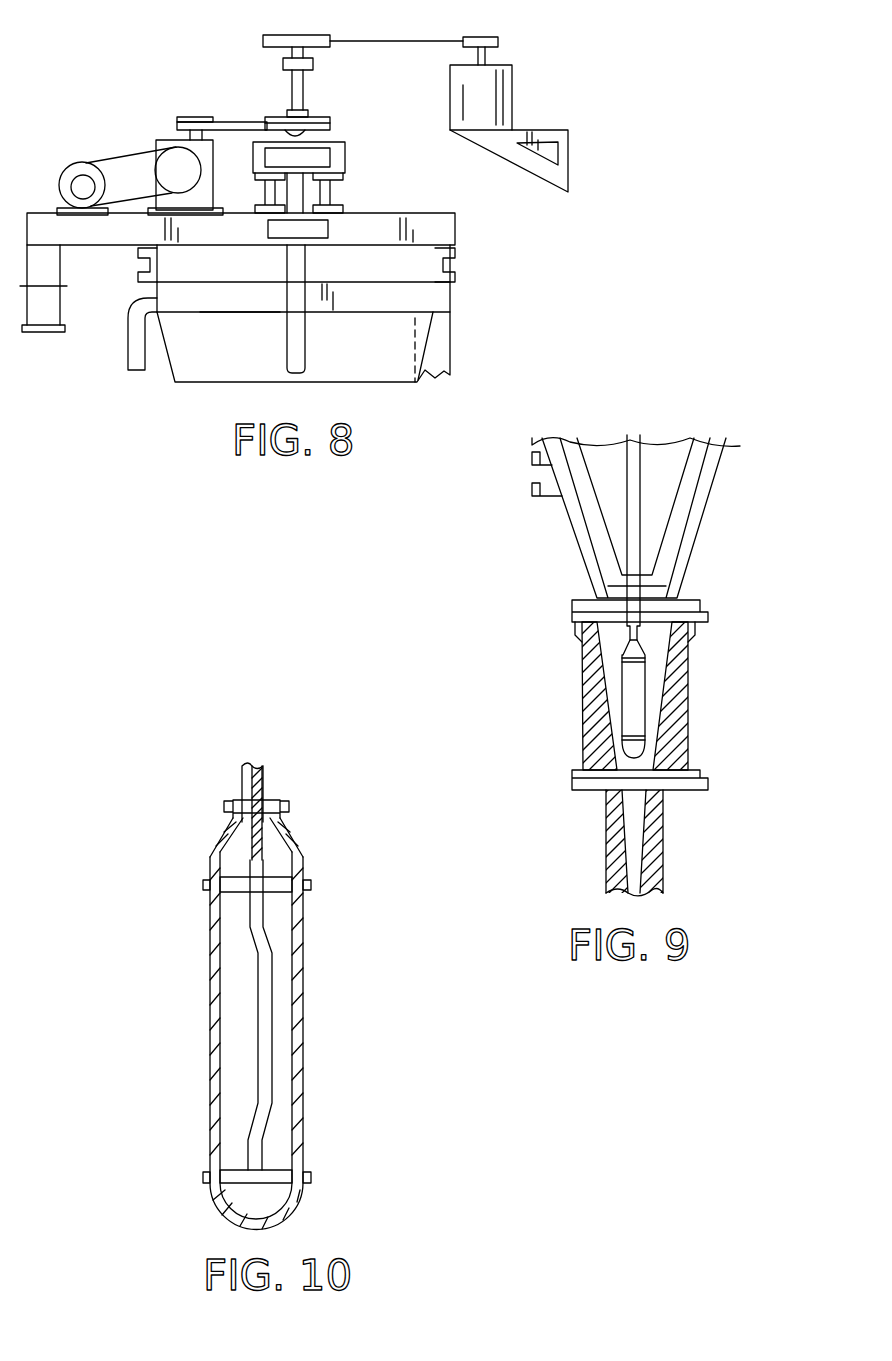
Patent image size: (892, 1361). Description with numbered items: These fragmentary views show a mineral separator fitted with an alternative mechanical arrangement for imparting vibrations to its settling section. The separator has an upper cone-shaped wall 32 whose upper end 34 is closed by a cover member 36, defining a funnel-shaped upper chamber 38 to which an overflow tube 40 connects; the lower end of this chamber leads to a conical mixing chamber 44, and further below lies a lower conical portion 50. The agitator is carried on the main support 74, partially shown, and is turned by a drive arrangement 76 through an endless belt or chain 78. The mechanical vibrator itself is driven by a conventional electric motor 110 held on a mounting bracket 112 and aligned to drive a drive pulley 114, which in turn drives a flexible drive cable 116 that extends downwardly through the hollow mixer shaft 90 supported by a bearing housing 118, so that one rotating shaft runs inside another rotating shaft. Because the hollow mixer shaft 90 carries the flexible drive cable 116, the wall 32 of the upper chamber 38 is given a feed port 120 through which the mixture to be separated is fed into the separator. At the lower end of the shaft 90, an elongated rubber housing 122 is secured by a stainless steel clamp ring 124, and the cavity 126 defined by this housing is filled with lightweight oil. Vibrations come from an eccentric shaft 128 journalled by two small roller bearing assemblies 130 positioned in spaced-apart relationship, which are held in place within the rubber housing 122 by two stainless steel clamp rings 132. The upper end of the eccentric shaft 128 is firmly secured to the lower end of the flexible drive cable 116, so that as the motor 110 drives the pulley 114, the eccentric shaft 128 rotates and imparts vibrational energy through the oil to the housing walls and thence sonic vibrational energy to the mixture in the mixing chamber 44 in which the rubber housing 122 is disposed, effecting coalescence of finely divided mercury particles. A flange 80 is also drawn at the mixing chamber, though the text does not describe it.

In FIG. 8, the upper cone-shaped wall 32 is at (420, 361).
In FIG. 8, the upper end 34 is at (341, 313).
In FIG. 8, the cover member 36 is at (400, 283).
In FIG. 8, the upper chamber 38 is at (400, 300).
In FIG. 9, the upper chamber 38 is at (710, 504).
In FIG. 8, the overflow tube 40 is at (126, 347).
In FIG. 9, the conical mixing chamber 44 is at (690, 729).
In FIG. 9, the lower conical portion 50 is at (663, 843).
In FIG. 8, the main support 74 is at (60, 297).
In FIG. 8, the drive arrangement 76 is at (126, 145).
In FIG. 8, the endless belt or chain 78 is at (243, 118).
In FIG. 9, the flange 80 is at (708, 612).
In FIG. 8, the hollow mixer shaft 90 is at (285, 333).
In FIG. 9, the hollow mixer shaft 90 is at (640, 465).
In FIG. 10, the hollow mixer shaft 90 is at (238, 781).
In FIG. 8, the electric motor 110 is at (512, 92).
In FIG. 8, the mounting bracket 112 is at (570, 160).
In FIG. 8, the drive pulley 114 is at (296, 35).
In FIG. 10, the flexible drive cable 116 is at (263, 786).
In FIG. 8, the bearing housing 118 is at (330, 231).
In FIG. 9, the feed port 120 is at (531, 465).
In FIG. 9, the rubber housing 122 is at (650, 678).
In FIG. 10, the rubber housing 122 is at (198, 1080).
In FIG. 10, the clamp ring 124 is at (225, 802).
In FIG. 10, the cavity 126 is at (275, 1003).
In FIG. 10, the eccentric shaft 128 is at (262, 985).
In FIG. 10, the roller bearing assemblies 130 is at (240, 878).
In FIG. 10, the clamp rings 132 is at (312, 883).